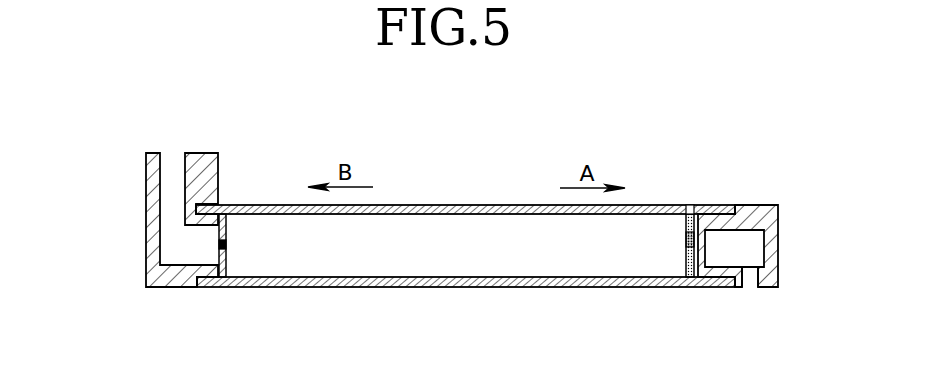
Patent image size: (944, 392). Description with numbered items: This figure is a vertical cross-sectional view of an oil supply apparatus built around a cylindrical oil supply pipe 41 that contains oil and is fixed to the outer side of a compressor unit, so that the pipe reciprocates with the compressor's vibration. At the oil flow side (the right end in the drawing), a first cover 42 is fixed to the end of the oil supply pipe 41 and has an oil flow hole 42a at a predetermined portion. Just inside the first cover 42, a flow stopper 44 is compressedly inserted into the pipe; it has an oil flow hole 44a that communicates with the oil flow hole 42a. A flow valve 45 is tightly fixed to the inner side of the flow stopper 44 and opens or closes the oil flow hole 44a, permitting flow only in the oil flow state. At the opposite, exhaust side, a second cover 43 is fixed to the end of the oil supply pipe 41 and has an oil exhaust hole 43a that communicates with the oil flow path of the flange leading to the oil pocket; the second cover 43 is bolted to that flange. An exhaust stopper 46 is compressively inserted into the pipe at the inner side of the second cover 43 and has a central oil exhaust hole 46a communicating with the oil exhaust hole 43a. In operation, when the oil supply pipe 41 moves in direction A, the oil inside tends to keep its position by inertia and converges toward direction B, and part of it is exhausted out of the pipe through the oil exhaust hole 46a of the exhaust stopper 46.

The oil supply pipe 41 is at (477, 205).
The first cover 42 is at (758, 207).
The oil flow hole 42a is at (750, 278).
The second cover 43 is at (150, 262).
The oil exhaust hole 43a is at (167, 190).
The flow stopper 44 is at (698, 275).
The oil flow hole 44a is at (687, 250).
The flow valve 45 is at (691, 207).
The exhaust stopper 46 is at (222, 285).
The oil exhaust hole 46a is at (227, 245).